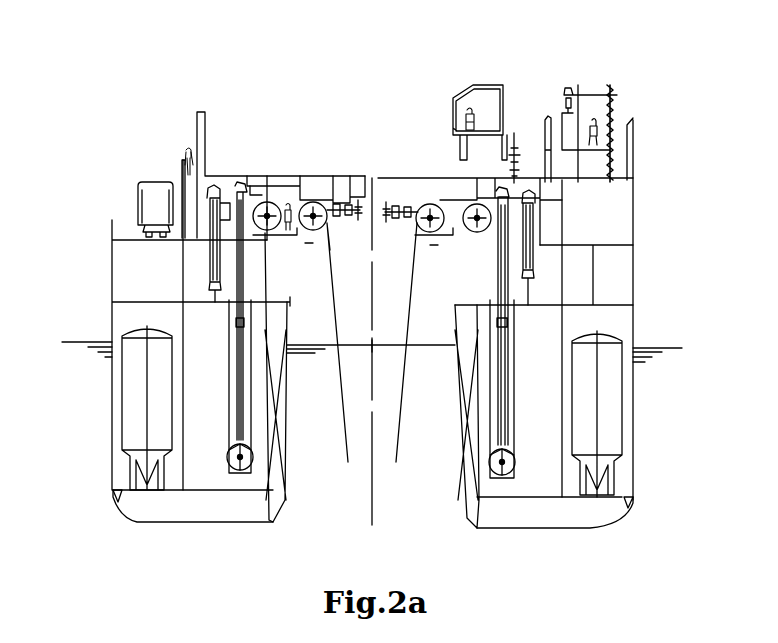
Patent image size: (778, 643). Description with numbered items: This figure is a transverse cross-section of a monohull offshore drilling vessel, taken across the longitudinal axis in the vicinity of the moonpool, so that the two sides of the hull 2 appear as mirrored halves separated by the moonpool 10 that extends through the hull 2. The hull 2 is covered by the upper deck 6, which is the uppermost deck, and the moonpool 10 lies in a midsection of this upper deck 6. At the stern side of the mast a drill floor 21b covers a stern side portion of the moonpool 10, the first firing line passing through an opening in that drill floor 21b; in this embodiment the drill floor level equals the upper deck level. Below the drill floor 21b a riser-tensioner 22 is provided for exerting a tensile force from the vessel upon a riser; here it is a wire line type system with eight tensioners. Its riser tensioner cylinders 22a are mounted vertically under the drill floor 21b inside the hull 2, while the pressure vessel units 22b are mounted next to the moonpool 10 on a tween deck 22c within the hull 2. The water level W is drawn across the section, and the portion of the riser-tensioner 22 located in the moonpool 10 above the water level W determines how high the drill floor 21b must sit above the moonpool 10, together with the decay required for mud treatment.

The hull 2 is at (112, 395).
The upper deck 6 is at (280, 158).
The moonpool 10 is at (372, 353).
The drill floor 21b is at (432, 170).
The riser-tensioner 22 is at (299, 266).
The riser tensioner cylinders 22a is at (232, 363).
The pressure vessel units 22b is at (163, 413).
The tween deck 22c is at (114, 494).
The water level W is at (301, 352).